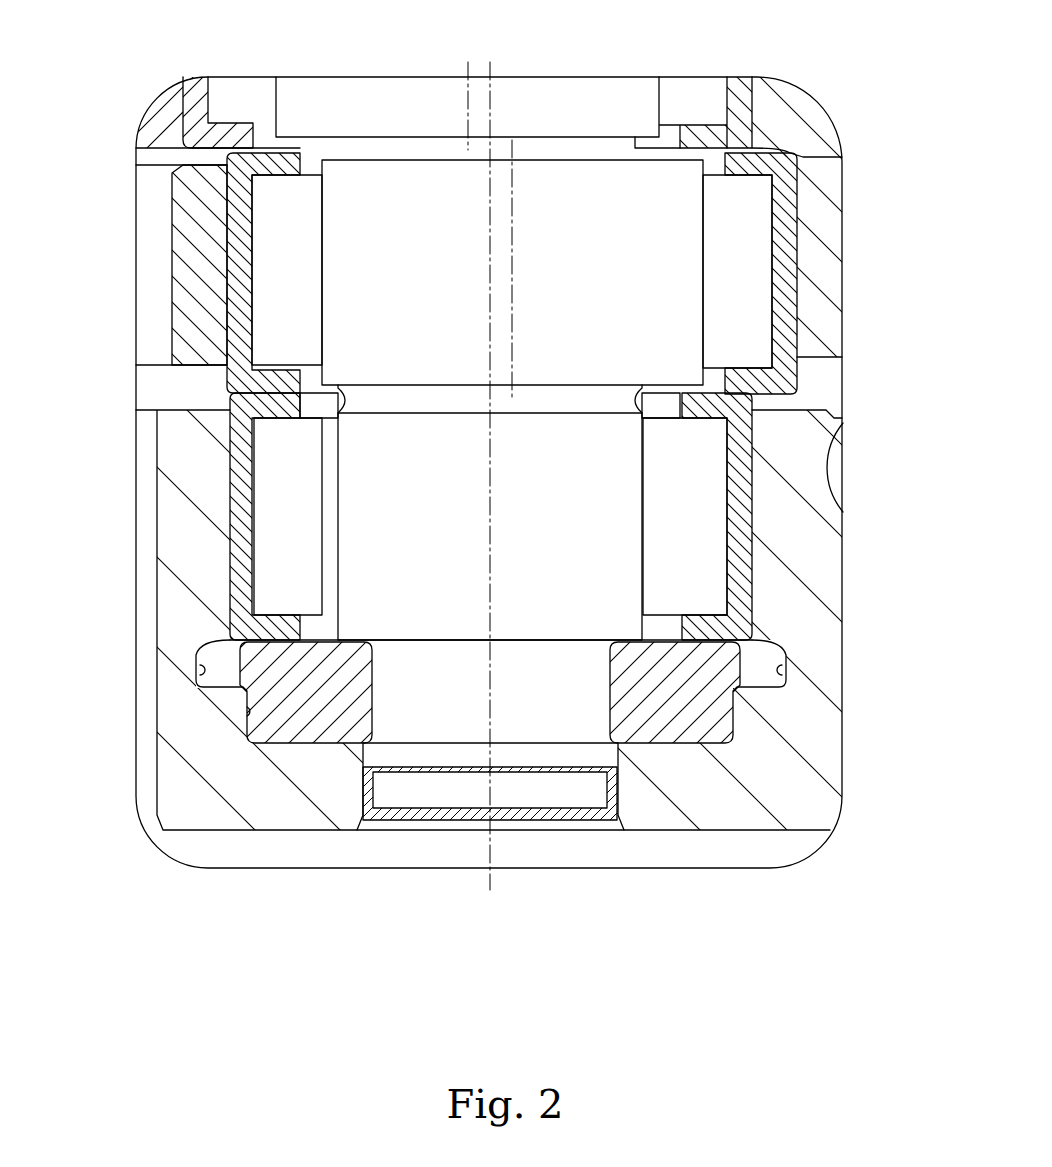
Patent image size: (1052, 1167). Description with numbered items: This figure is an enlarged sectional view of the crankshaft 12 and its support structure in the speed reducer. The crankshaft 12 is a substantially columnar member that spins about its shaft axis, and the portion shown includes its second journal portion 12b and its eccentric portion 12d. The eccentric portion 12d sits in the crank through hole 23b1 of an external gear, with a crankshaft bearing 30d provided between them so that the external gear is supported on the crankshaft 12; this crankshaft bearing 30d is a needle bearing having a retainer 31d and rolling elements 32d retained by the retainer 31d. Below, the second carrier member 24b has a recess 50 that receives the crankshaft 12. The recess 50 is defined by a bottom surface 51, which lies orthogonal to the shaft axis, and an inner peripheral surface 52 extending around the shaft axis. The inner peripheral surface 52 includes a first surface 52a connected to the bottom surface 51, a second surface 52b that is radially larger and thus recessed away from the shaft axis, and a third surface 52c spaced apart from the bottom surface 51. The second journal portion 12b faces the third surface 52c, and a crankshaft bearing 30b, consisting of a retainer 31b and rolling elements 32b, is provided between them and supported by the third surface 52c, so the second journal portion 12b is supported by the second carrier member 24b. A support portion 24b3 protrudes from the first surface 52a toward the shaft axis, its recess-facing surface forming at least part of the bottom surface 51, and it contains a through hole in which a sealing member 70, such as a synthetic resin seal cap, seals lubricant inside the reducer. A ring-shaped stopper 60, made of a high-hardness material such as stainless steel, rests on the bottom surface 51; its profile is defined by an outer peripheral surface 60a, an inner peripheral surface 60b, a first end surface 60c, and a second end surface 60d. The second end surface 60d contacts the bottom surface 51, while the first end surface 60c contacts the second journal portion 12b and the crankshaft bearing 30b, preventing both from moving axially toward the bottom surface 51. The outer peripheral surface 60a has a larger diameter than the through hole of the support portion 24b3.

The crankshaft 12 is at (413, 602).
The second journal portion 12b is at (462, 570).
The eccentric portion 12d is at (635, 253).
The crank through hole 23b1 is at (787, 303).
The second carrier member 24b is at (813, 717).
The support portion 24b3 is at (675, 730).
The crankshaft bearing 30b is at (703, 650).
The crankshaft bearing 30d is at (222, 382).
The retainer 31b is at (243, 498).
The retainer 31d is at (243, 257).
The rolling element 32b is at (697, 520).
The rolling element 32d is at (745, 253).
The recess 50 is at (662, 398).
The bottom surface 51 is at (663, 780).
The inner peripheral surface 52 is at (232, 539).
The first surface 52a is at (250, 712).
The second surface 52b is at (197, 683).
The third surface 52c is at (233, 585).
The stopper 60 is at (298, 695).
The outer peripheral surface 60a is at (737, 710).
The inner peripheral surface 60b is at (608, 684).
The first end surface 60c is at (633, 642).
The second end surface 60d is at (248, 712).
The sealing member 70 is at (537, 820).